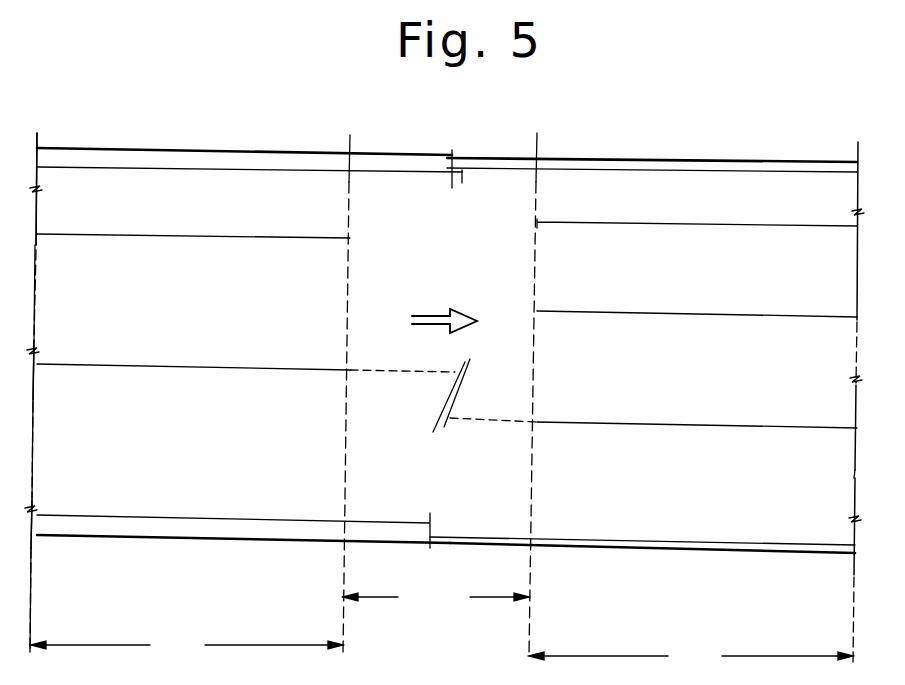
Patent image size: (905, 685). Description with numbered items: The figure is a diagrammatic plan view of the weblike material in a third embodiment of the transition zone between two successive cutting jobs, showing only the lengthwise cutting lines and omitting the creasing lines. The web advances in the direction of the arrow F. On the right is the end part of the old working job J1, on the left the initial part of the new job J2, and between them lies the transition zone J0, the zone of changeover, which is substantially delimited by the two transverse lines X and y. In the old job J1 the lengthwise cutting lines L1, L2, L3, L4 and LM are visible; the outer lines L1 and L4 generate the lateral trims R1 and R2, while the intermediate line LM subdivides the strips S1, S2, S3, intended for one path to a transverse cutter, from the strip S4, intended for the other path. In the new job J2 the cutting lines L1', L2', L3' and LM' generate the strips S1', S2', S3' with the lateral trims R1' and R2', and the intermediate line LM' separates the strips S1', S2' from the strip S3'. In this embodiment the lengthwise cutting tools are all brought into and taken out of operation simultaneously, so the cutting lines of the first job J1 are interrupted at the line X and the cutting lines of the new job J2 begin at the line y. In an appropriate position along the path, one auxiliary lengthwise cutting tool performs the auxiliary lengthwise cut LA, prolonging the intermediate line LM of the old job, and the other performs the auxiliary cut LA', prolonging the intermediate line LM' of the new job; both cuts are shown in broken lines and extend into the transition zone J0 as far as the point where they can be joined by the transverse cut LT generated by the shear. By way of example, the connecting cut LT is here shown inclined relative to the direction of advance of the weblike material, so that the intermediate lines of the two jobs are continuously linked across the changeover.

The lateral trim R1' is at (244, 132).
The lengthwise cutting line L1' is at (249, 184).
The strip S1' is at (200, 202).
The lengthwise cutting line L2' is at (193, 254).
The strip S2' is at (200, 300).
The intermediate lengthwise cutting line LM' is at (193, 347).
The strip S3' is at (200, 442).
The lengthwise cutting line L3' is at (233, 509).
The lateral trim R2' is at (243, 560).
The transverse line y is at (348, 382).
The transverse line X is at (538, 386).
The direction of advance F is at (434, 315).
The transverse cut LT is at (454, 400).
The auxiliary lengthwise cut LA' is at (402, 401).
The auxiliary lengthwise cut LA is at (493, 453).
The lateral trim R1 is at (652, 137).
The lengthwise cutting line L1 is at (652, 185).
The strip S1 is at (700, 197).
The lengthwise cutting line L2 is at (697, 246).
The strip S2 is at (700, 268).
The lengthwise cutting line L3 is at (697, 334).
The strip S3 is at (700, 369).
The intermediate lengthwise cutting line LM is at (697, 443).
The strip S4 is at (783, 496).
The lengthwise cutting line L4 is at (661, 541).
The lateral trim R2 is at (652, 566).
The transition zone J0 is at (436, 598).
The initial part of the new job J2 is at (187, 646).
The end part of the old working job J1 is at (691, 657).